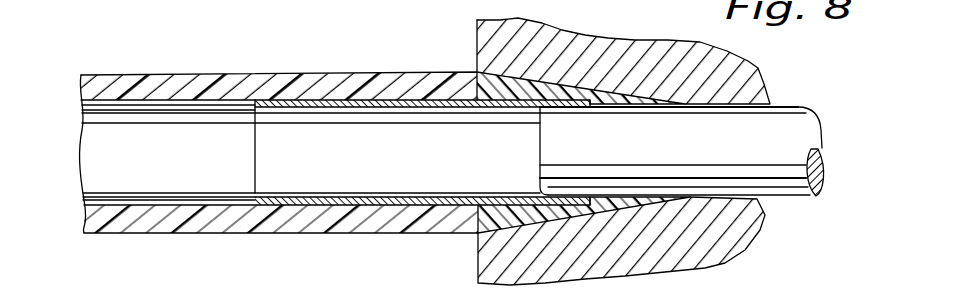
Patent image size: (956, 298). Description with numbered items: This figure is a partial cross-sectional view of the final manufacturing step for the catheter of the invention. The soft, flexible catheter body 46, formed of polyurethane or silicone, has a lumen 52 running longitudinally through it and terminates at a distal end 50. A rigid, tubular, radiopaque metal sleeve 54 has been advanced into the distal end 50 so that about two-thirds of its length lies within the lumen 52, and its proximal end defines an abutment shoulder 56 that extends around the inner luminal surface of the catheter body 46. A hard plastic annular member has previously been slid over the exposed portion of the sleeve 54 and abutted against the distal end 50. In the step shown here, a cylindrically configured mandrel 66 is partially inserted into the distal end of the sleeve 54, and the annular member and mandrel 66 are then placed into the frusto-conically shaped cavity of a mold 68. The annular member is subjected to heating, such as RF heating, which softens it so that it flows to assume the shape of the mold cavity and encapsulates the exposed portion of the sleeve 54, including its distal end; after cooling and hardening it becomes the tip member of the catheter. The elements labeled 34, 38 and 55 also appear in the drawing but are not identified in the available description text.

The catheter assembly 34 is at (345, 6).
The distal tip member 38 is at (623, 80).
The catheter body 46 is at (297, 70).
The distal end 50 is at (470, 69).
The lumen 52 is at (160, 133).
The sleeve 54 is at (342, 207).
The inner liner 55 is at (382, 194).
The abutment shoulder 56 is at (255, 200).
The mandrel 66 is at (782, 122).
The mold 68 is at (733, 237).